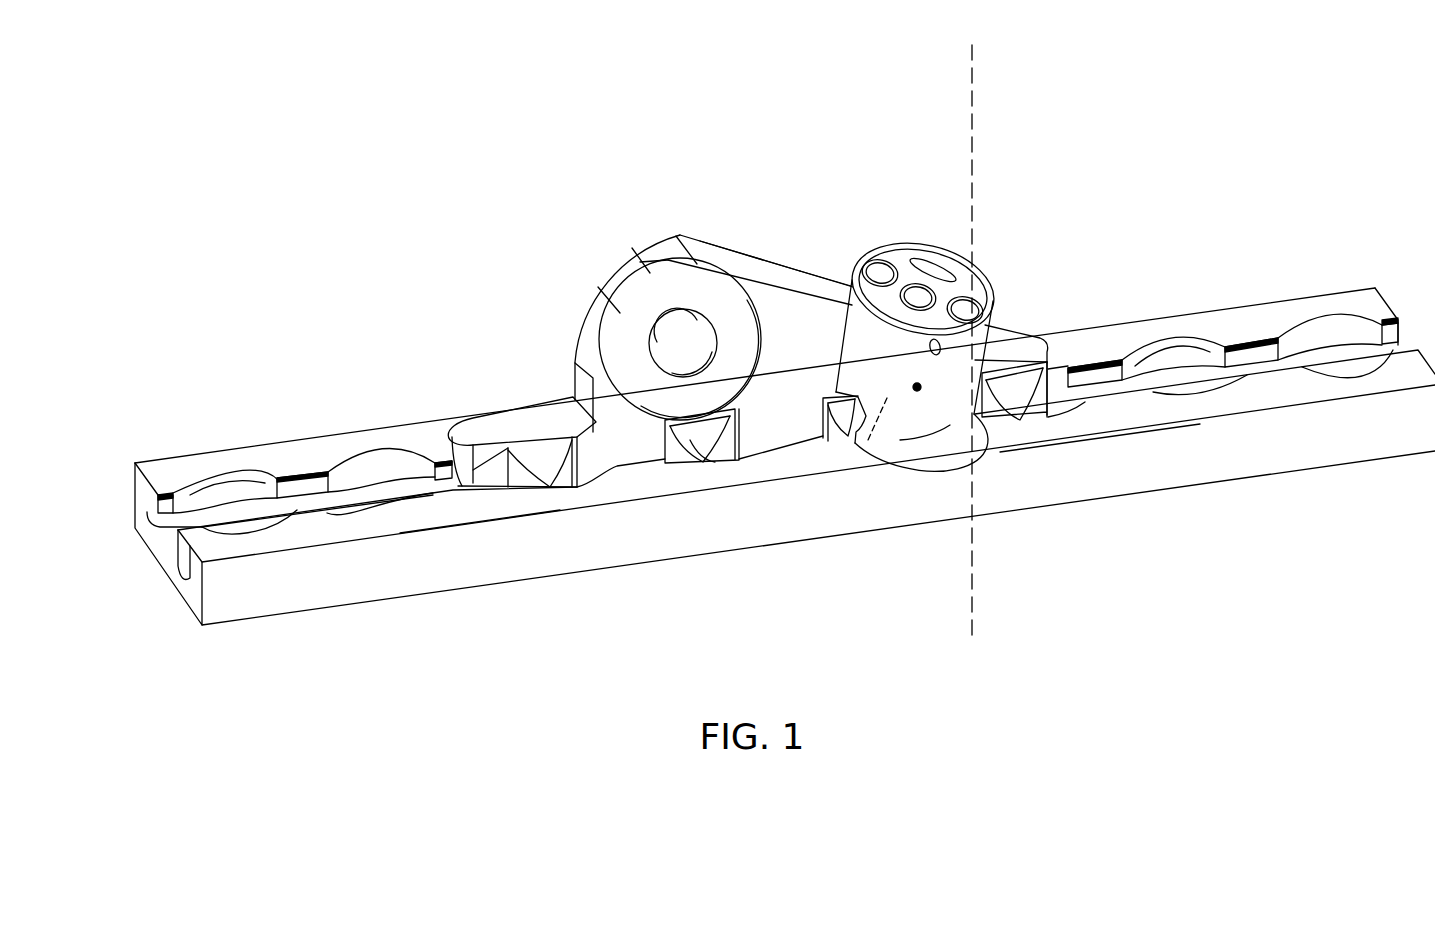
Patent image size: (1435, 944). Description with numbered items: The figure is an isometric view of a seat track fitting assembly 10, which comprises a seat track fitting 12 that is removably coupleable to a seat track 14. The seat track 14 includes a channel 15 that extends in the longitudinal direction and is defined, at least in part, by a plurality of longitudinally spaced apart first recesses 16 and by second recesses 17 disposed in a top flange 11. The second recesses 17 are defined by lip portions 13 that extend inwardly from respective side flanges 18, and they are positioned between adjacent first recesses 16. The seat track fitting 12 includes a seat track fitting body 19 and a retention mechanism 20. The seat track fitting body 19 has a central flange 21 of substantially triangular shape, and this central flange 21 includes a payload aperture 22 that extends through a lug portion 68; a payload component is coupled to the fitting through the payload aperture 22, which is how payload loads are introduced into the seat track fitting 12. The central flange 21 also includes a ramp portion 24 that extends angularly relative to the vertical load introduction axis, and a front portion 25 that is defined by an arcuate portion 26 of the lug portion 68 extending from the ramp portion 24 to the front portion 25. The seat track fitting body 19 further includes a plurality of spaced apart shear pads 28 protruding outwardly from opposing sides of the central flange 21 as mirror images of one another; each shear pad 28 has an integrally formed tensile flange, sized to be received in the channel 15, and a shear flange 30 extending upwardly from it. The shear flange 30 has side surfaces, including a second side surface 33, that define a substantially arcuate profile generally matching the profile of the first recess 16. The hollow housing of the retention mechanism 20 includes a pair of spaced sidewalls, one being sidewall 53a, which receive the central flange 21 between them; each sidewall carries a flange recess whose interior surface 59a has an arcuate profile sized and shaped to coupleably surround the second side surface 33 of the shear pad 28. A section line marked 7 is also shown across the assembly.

The seat track fitting assembly 10 is at (1261, 129).
The section line 7- 7 is at (972, 57).
The top flange 11 is at (357, 568).
The seat track fitting 12 is at (1013, 333).
The lip portions 13 is at (325, 476).
The seat track 14 is at (1128, 478).
The channel 15 is at (172, 565).
The first recesses 16 is at (233, 505).
The second recesses 17 is at (305, 490).
The side flanges 18 is at (545, 555).
The seat track fitting body 19 is at (790, 280).
The retention mechanism 20 is at (949, 248).
The central flange 21 is at (838, 318).
The payload aperture 22 is at (666, 332).
The ramp portion 24 is at (740, 262).
The front portion 25 is at (510, 428).
The arcuate portion 26 is at (622, 272).
The shear pads 28 is at (680, 450).
The shear flange 30 is at (825, 432).
The second side surface 33 is at (884, 427).
The sidewall 53a is at (923, 425).
The interior surface 59a is at (836, 414).
The lug portion 68 is at (698, 290).